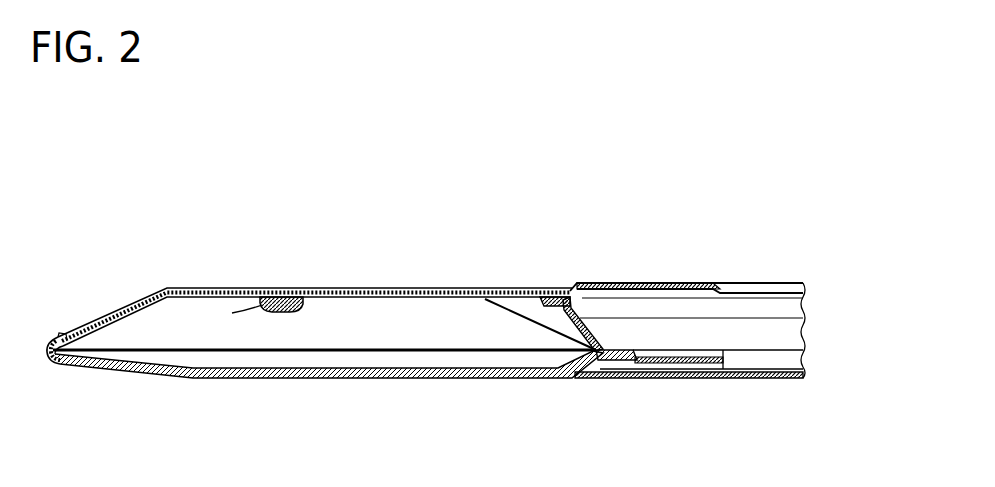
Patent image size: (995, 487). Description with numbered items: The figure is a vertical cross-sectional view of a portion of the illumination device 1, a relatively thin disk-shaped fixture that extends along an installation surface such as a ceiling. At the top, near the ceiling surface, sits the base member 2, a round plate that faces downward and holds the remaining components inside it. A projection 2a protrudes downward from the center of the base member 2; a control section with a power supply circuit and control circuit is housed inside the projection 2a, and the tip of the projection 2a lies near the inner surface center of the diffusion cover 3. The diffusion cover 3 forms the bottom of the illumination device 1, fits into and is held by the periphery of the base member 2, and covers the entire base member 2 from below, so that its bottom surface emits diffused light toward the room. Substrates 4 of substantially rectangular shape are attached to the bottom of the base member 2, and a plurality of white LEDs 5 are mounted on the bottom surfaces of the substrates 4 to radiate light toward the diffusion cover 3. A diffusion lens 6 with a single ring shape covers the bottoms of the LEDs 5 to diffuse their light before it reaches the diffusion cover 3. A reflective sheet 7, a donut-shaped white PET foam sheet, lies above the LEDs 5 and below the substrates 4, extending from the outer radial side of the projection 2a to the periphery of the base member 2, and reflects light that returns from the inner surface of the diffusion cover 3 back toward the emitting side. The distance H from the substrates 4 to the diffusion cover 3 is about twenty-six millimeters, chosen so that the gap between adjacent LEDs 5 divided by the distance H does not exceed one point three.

The illumination device 1 is at (774, 182).
The base member 2 is at (414, 287).
The projection 2a is at (695, 337).
The diffusion cover 3 is at (429, 380).
The substrates 4 is at (347, 288).
The LEDs 5 is at (283, 292).
The diffusion lens 6 is at (232, 313).
The reflective sheet 7 is at (515, 305).
The distance H is at (317, 300).